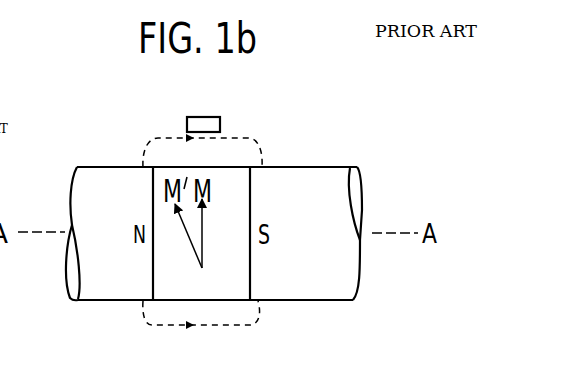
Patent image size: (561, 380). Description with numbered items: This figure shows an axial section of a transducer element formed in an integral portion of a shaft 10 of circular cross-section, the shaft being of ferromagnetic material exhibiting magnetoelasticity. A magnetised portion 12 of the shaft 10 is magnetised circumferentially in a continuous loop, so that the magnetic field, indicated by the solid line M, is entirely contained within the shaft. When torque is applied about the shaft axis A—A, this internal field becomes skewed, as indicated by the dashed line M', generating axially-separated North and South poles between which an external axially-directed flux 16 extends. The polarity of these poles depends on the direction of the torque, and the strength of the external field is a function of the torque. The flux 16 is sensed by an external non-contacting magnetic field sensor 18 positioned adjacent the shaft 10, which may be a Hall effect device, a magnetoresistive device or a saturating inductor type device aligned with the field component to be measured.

The shaft 10 is at (325, 168).
The magnetised portion 12 is at (162, 167).
The external axially-directed flux 16 is at (248, 323).
The magnetic field sensor 18 is at (200, 117).